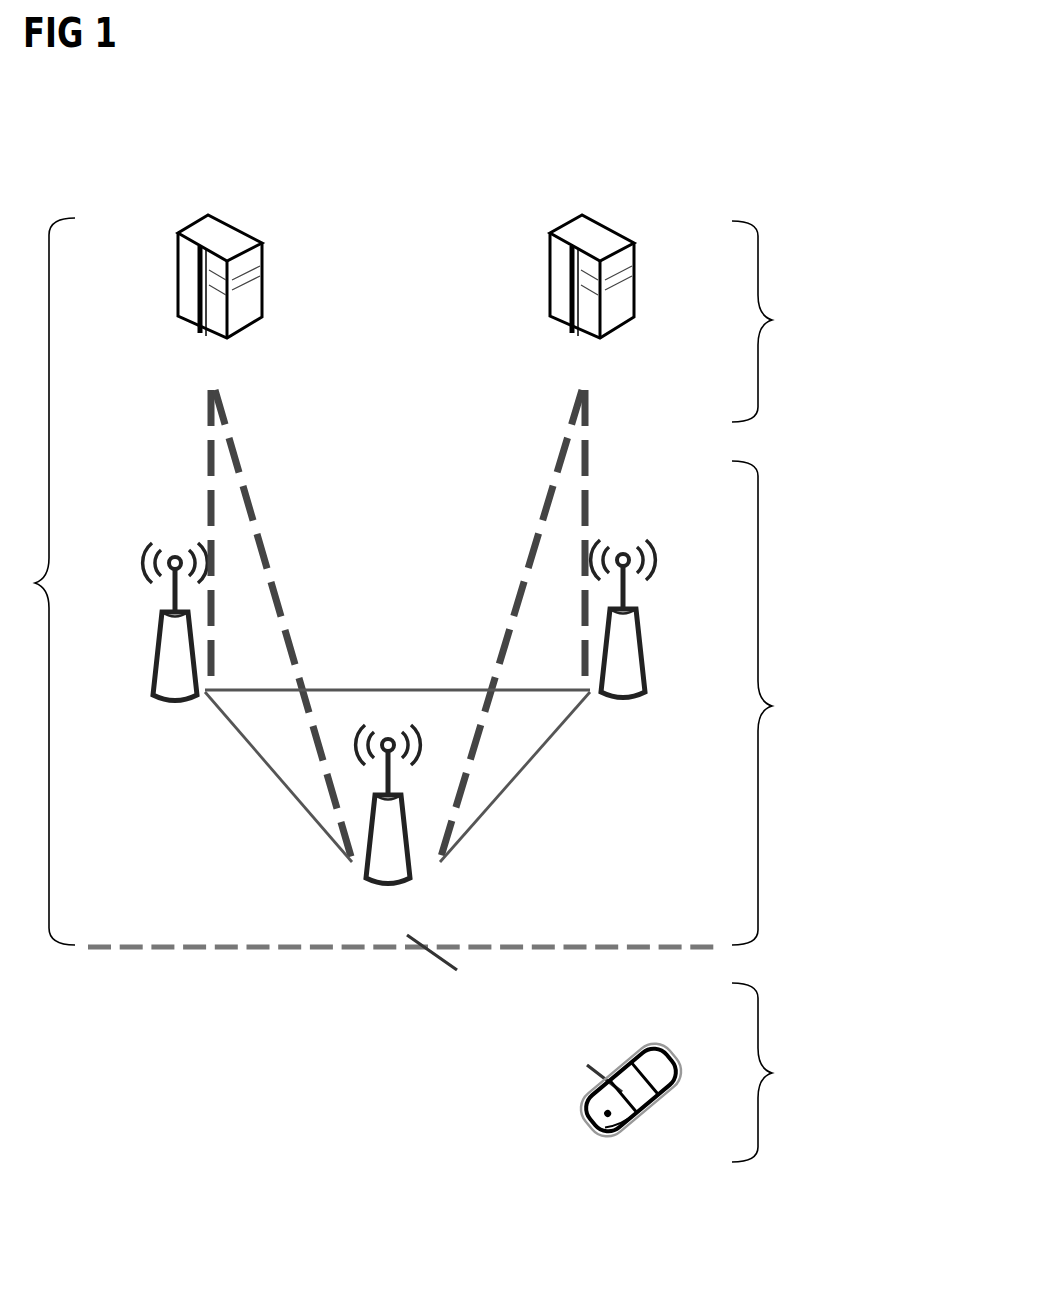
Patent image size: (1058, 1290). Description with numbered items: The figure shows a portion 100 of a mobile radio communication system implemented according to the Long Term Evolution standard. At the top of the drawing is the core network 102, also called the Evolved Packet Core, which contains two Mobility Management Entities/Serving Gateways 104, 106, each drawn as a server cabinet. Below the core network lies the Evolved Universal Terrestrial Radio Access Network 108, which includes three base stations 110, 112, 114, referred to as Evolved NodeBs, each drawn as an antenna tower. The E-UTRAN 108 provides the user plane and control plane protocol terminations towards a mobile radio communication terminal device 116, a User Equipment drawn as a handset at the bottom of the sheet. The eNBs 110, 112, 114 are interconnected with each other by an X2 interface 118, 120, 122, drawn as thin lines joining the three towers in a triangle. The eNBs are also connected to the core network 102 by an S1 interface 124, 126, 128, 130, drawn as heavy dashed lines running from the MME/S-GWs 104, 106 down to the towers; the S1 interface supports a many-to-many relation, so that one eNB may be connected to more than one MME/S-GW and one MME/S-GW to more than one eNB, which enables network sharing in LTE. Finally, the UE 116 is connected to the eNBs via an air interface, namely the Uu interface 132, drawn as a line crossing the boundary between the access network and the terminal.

The portion of a mobile radio communication system 100 is at (748, 156).
The core network 102 is at (812, 302).
The Mobility Management Entity/Serving Gateway 104 is at (593, 210).
The Mobility Management Entity/Serving Gateway 106 is at (208, 210).
The Evolved Universal Terrestrial Radio Access Network 108 is at (812, 668).
The base station 110 is at (632, 590).
The base station 112 is at (178, 760).
The base station 114 is at (410, 722).
The mobile radio communication terminal device 116 is at (640, 1056).
The X2 interface 118 is at (292, 822).
The X2 interface 120 is at (348, 684).
The X2 interface 122 is at (530, 760).
The S1 interface 124 is at (208, 462).
The S1 interface 126 is at (270, 556).
The S1 interface 128 is at (522, 552).
The S1 interface 130 is at (585, 500).
The Uu interface 132 is at (433, 967).